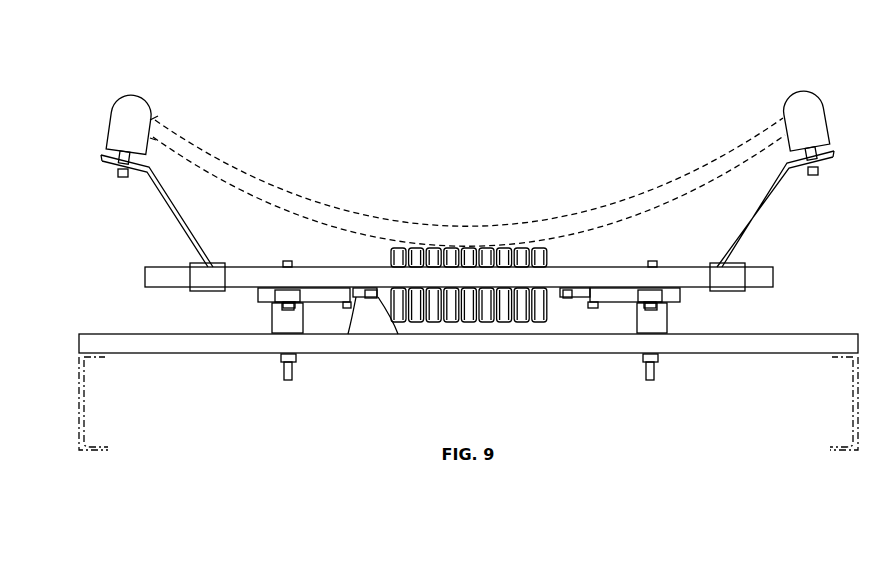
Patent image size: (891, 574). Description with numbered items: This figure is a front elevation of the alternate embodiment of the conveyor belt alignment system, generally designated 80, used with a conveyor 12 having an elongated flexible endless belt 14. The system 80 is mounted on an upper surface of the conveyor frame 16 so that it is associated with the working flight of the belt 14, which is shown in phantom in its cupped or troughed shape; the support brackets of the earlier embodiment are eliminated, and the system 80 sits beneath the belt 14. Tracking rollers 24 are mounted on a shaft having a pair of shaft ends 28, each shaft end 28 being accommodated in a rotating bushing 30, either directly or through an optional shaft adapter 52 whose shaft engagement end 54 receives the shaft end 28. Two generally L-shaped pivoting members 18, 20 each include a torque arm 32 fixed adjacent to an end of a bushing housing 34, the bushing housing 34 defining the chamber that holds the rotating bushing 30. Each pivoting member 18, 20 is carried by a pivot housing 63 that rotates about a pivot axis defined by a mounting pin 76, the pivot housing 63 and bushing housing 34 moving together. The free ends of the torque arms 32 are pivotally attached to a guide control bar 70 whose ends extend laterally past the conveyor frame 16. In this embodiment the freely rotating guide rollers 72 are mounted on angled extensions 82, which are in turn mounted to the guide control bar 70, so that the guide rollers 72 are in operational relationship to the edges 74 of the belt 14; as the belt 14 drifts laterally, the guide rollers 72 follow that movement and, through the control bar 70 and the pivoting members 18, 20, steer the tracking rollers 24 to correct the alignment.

The conveyor 12 is at (283, 148).
The conveyor belt 14 is at (655, 176).
The conveyor frame 16 is at (852, 385).
The pivoting member 18 is at (678, 318).
The pivoting member 20 is at (244, 297).
The tracking rollers 24 is at (547, 248).
The shaft end 28 is at (384, 300).
The rotating bushing 30 is at (592, 322).
The torque arm 32 is at (290, 292).
The bushing housing 34 is at (622, 291).
The shaft adapter 52 is at (356, 302).
The shaft engagement end 54 is at (368, 300).
The pivot housing 63 is at (272, 318).
The guide control bar 70 is at (332, 270).
The guide rollers 72 is at (138, 103).
The belt edges 74 is at (156, 120).
The mounting pin 76 is at (288, 384).
The alternate embodiment system 80 is at (662, 248).
The angled extensions 82 is at (174, 212).